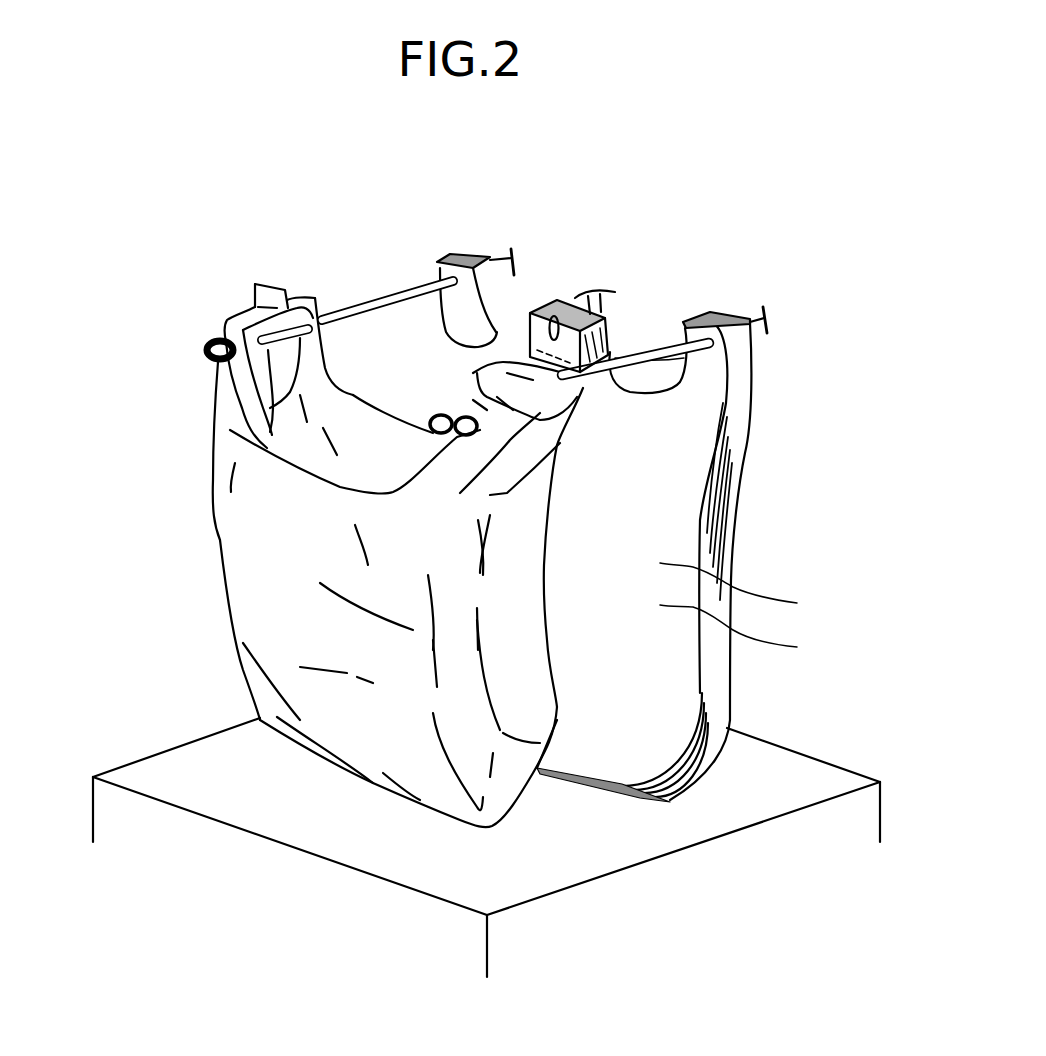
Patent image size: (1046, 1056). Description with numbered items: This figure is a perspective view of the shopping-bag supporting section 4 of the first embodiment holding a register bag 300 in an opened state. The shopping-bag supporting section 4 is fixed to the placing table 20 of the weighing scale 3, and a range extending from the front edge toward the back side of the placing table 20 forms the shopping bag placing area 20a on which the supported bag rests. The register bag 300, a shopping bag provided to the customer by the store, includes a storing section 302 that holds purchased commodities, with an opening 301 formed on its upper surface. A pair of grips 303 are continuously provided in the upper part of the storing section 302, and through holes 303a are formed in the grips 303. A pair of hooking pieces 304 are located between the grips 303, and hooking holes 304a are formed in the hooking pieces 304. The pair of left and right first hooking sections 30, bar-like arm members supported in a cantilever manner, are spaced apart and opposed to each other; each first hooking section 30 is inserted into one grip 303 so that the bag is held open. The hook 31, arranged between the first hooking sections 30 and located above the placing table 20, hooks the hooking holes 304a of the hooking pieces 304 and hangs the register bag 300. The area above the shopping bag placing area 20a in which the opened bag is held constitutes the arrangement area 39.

The weighing scale 3 is at (486, 833).
The shopping-bag supporting section 4 is at (492, 269).
The placing table 20 is at (486, 851).
The shopping bag placing area 20a is at (390, 845).
The first hooking section 30 is at (355, 318).
The hook 31 is at (553, 316).
The arrangement area 39 is at (612, 841).
The register bag 300 is at (497, 501).
The opening 301 is at (390, 427).
The storing section 302 is at (213, 520).
The grip 303 is at (492, 269).
The through hole 303a is at (212, 340).
The hooking piece 304 is at (568, 254).
The hooking hole 304a is at (595, 300).